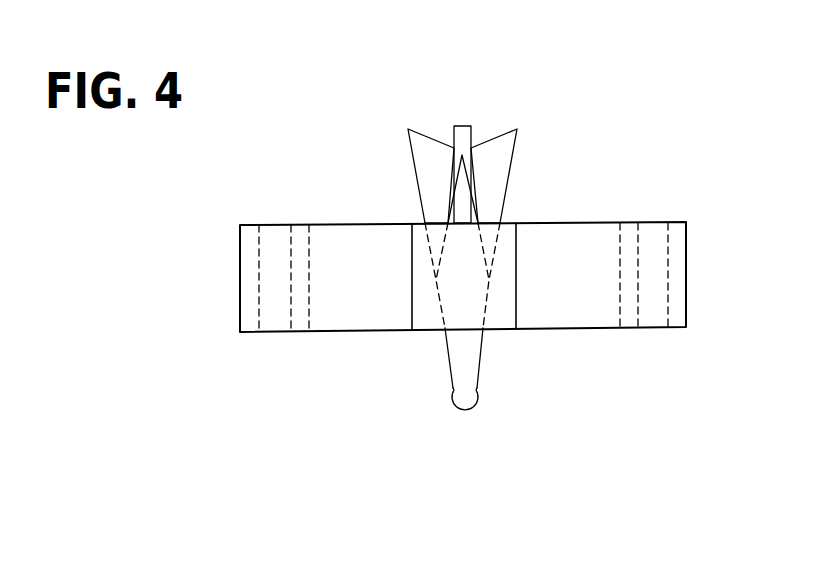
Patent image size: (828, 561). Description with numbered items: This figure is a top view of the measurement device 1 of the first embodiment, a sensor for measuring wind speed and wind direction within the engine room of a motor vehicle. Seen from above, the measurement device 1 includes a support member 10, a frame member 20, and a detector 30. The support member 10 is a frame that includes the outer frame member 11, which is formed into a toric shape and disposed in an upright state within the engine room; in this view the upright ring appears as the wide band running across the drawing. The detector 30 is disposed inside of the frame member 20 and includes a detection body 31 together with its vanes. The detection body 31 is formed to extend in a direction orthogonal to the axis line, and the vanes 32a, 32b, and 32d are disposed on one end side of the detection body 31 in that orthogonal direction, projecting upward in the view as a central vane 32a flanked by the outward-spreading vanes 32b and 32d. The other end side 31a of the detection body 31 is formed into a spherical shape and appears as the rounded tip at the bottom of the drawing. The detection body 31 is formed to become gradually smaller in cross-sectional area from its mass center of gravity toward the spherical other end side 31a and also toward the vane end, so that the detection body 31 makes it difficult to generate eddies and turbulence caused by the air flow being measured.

The measurement device 1 is at (266, 458).
The support member 10 is at (250, 337).
The outer frame member 11 is at (569, 222).
The frame member 20 is at (657, 216).
The detector 30 is at (450, 270).
The detection body 31 is at (472, 350).
The other end side of the detection body 31a is at (465, 411).
The vane 32a is at (463, 133).
The vane 32b is at (495, 158).
The vane 32d is at (425, 161).